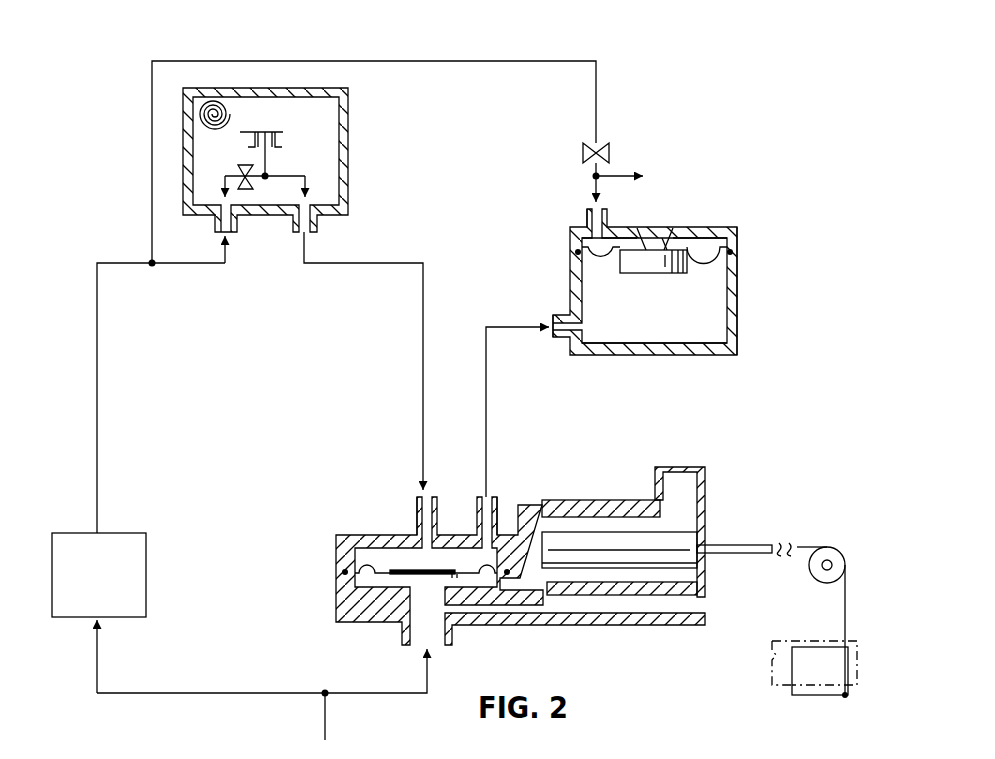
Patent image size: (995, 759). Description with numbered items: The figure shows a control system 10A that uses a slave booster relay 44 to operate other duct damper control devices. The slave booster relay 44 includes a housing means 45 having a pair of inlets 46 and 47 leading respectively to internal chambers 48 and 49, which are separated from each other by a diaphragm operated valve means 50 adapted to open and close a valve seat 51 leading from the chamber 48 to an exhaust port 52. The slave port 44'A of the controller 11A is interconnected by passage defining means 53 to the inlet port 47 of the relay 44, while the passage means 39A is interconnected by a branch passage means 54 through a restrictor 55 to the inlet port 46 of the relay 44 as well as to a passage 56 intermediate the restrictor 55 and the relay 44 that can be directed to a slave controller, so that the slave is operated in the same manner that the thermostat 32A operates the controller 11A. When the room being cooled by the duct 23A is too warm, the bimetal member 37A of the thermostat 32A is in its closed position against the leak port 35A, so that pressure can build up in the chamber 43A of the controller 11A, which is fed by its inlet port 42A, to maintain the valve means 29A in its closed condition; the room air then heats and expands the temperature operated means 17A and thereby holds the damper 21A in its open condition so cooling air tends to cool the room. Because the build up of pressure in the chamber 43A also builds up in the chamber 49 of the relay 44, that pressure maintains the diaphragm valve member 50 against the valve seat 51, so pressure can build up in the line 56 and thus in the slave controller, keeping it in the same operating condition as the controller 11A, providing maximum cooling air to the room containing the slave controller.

The control system 10A is at (787, 79).
The branch passage means 54 is at (447, 61).
The thermostat 32A is at (363, 177).
The bimetal member 37A is at (242, 130).
The leak port 35A is at (283, 137).
The passage means 39A is at (108, 409).
The restrictor 55 is at (585, 153).
The passage 56 is at (620, 176).
The slave booster relay 44 is at (695, 278).
The inlet 46 is at (586, 210).
The inlet 47 is at (558, 313).
The housing means 45 is at (738, 308).
The internal chamber 48 is at (595, 242).
The exhaust port 52 is at (657, 233).
The valve seat 51 is at (668, 248).
The diaphragm operated valve means 50 is at (648, 267).
The internal chamber 49 is at (673, 322).
The passage defining means 53 is at (486, 423).
The chamber 43A is at (385, 557).
The inlet port 42A is at (415, 507).
The slave port 44'A is at (537, 493).
The valve means 29A is at (433, 570).
The controller 11A is at (716, 471).
The temperature operated means 17A is at (674, 524).
The damper 21A is at (815, 688).
The duct 23A is at (778, 650).